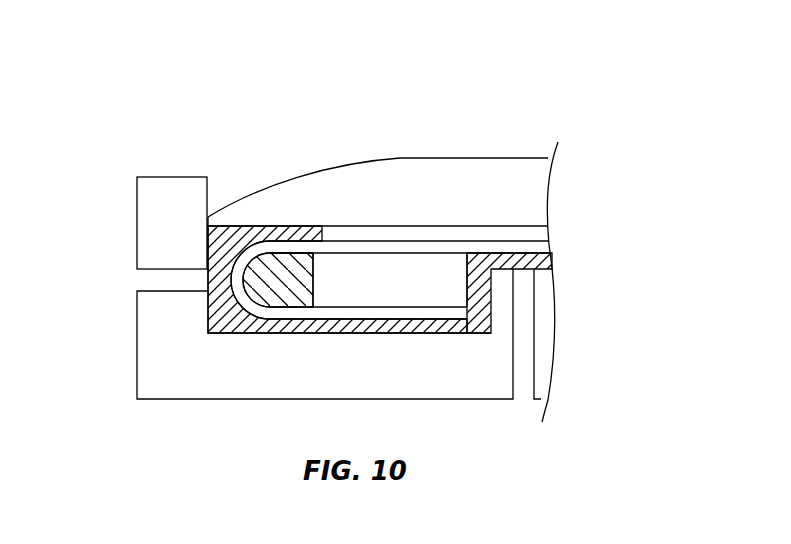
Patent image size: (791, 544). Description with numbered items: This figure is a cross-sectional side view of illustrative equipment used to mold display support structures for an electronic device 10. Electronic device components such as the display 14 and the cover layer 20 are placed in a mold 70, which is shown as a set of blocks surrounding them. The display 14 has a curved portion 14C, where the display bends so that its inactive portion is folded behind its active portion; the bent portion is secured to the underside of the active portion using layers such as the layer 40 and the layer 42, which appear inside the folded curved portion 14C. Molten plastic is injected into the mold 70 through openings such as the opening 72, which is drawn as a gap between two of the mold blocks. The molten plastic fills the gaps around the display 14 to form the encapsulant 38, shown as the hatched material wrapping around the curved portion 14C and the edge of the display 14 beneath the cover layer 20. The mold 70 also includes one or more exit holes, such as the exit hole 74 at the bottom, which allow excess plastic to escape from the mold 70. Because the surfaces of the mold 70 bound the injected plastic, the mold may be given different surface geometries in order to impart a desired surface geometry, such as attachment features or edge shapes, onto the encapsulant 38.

The electronic device 10 is at (524, 82).
The display 14 is at (367, 250).
The curved portion 14C is at (243, 296).
The cover layer 20 is at (462, 177).
The encapsulant 38 is at (247, 237).
The layer 40 is at (298, 292).
The layer 42 is at (395, 290).
The mold 70 is at (177, 190).
The opening 72 is at (129, 282).
The exit hole 74 is at (524, 408).